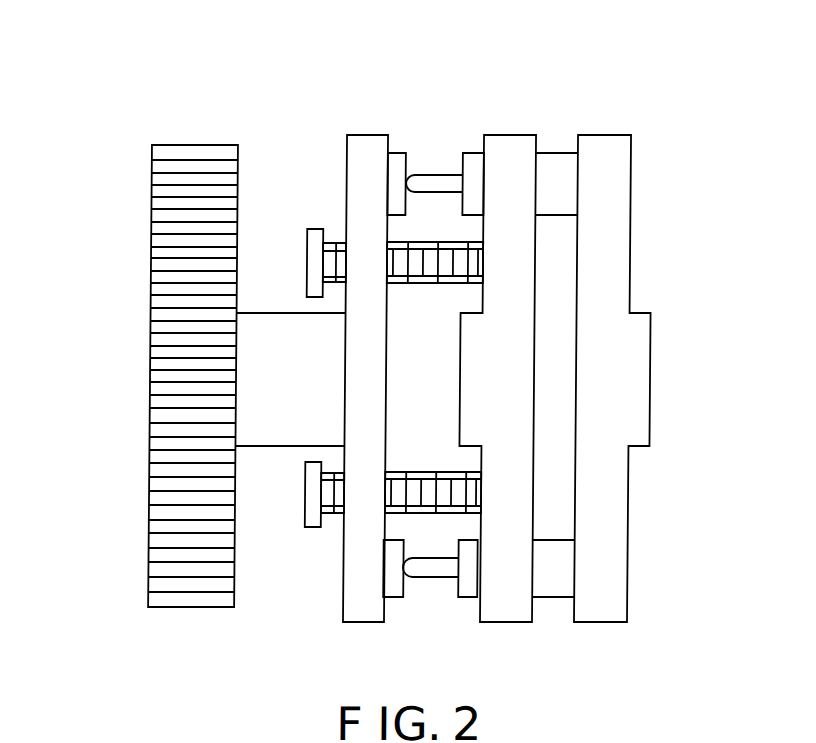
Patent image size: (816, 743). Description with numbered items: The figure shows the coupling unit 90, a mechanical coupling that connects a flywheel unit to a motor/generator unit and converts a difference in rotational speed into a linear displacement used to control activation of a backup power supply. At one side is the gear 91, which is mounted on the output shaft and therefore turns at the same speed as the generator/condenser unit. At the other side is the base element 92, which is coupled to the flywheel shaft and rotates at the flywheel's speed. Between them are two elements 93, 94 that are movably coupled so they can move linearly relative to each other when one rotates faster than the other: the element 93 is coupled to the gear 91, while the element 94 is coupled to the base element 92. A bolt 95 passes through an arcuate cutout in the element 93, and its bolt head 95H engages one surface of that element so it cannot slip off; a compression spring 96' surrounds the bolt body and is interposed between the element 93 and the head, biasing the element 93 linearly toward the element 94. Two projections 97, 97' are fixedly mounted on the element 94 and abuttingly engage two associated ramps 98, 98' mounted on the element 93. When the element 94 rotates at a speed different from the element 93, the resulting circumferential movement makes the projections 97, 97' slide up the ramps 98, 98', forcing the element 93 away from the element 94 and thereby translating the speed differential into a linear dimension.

The coupling unit 90 is at (432, 108).
The gear 91 is at (128, 212).
The base element 92 is at (607, 210).
The element 93 is at (365, 145).
The element 94 is at (509, 597).
The bolt 95 is at (335, 233).
The bolt head 95H is at (273, 630).
The compression spring 96' is at (408, 460).
The projection 97 is at (517, 134).
The projection 97' is at (451, 612).
The ramp 98 is at (388, 124).
The ramp 98' is at (376, 612).